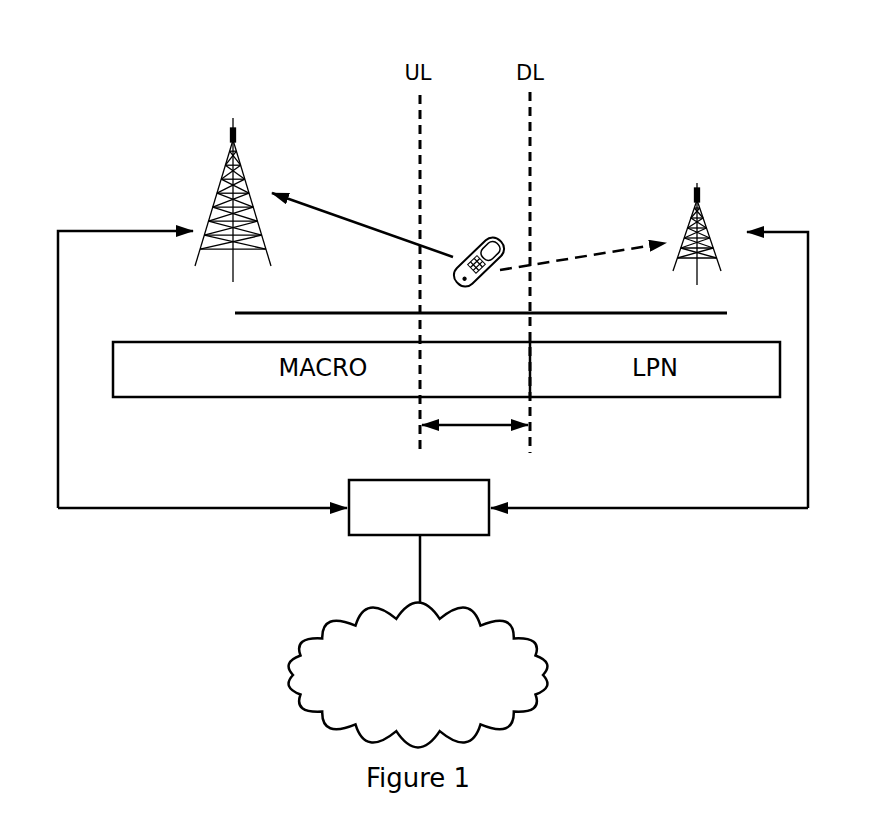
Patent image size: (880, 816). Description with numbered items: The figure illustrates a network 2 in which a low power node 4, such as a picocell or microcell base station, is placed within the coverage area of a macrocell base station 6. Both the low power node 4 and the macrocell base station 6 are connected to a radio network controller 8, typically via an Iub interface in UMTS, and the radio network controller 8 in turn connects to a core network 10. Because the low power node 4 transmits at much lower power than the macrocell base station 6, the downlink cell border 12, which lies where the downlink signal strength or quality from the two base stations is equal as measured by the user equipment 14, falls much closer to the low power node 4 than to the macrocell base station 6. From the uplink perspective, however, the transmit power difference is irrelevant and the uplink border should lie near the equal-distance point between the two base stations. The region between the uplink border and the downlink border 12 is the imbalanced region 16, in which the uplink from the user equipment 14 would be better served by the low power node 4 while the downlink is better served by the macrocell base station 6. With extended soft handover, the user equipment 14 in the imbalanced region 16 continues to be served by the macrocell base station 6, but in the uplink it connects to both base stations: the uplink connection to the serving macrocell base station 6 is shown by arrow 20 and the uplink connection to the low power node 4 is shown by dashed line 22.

The network 2 is at (268, 92).
The low power node 4 is at (688, 212).
The macrocell base station 6 is at (225, 152).
The radio network controller 8 is at (369, 478).
The core network 10 is at (298, 648).
The cell border 12 is at (533, 138).
The user equipment 14 is at (487, 240).
The imbalanced region 16 is at (497, 432).
The arrow 20 is at (350, 219).
The dashed line 22 is at (592, 250).